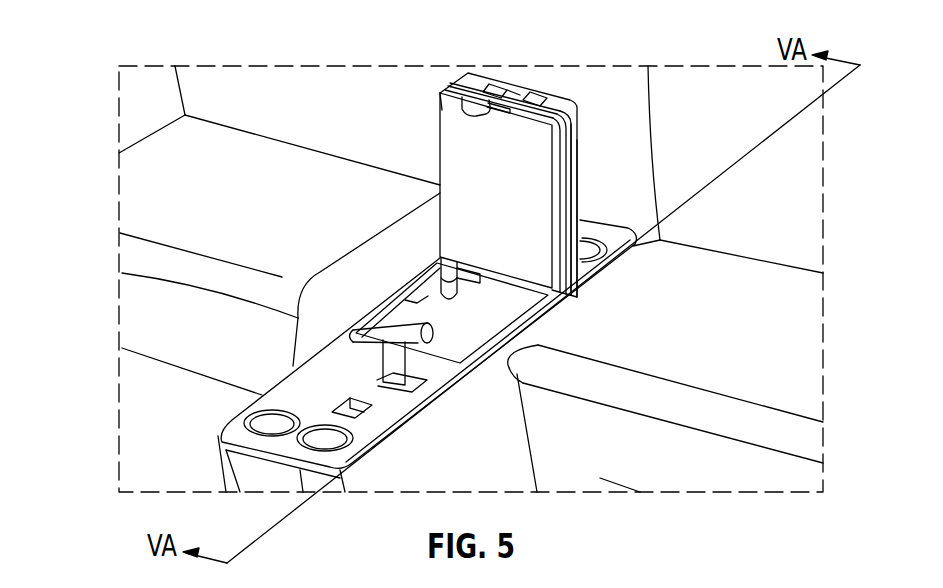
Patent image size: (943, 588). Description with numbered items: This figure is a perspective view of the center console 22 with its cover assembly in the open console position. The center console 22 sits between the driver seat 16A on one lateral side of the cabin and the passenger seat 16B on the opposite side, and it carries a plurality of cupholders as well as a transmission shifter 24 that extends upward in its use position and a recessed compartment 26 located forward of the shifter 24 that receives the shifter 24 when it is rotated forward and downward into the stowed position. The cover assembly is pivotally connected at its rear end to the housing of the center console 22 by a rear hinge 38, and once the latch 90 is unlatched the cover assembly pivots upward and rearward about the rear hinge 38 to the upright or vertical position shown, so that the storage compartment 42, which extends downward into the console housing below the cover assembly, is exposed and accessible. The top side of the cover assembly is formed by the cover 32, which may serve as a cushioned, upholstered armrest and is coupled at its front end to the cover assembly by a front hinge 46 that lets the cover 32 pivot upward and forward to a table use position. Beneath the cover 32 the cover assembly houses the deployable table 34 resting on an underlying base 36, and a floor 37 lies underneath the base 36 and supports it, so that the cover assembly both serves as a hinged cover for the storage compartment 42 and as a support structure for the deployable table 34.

The driver seat 16A is at (755, 340).
The passenger seat 16B is at (147, 185).
The center console 22 is at (315, 378).
The transmission shifter 24 is at (298, 316).
The recessed compartment 26 is at (300, 322).
The cover 32 is at (485, 72).
The deployable table 34 is at (573, 152).
The base 36 is at (585, 118).
The floor 37 is at (437, 94).
The rear hinge 38 is at (417, 303).
The storage compartment 42 is at (425, 295).
The front hinge 46 is at (533, 88).
The latch 90 is at (490, 110).